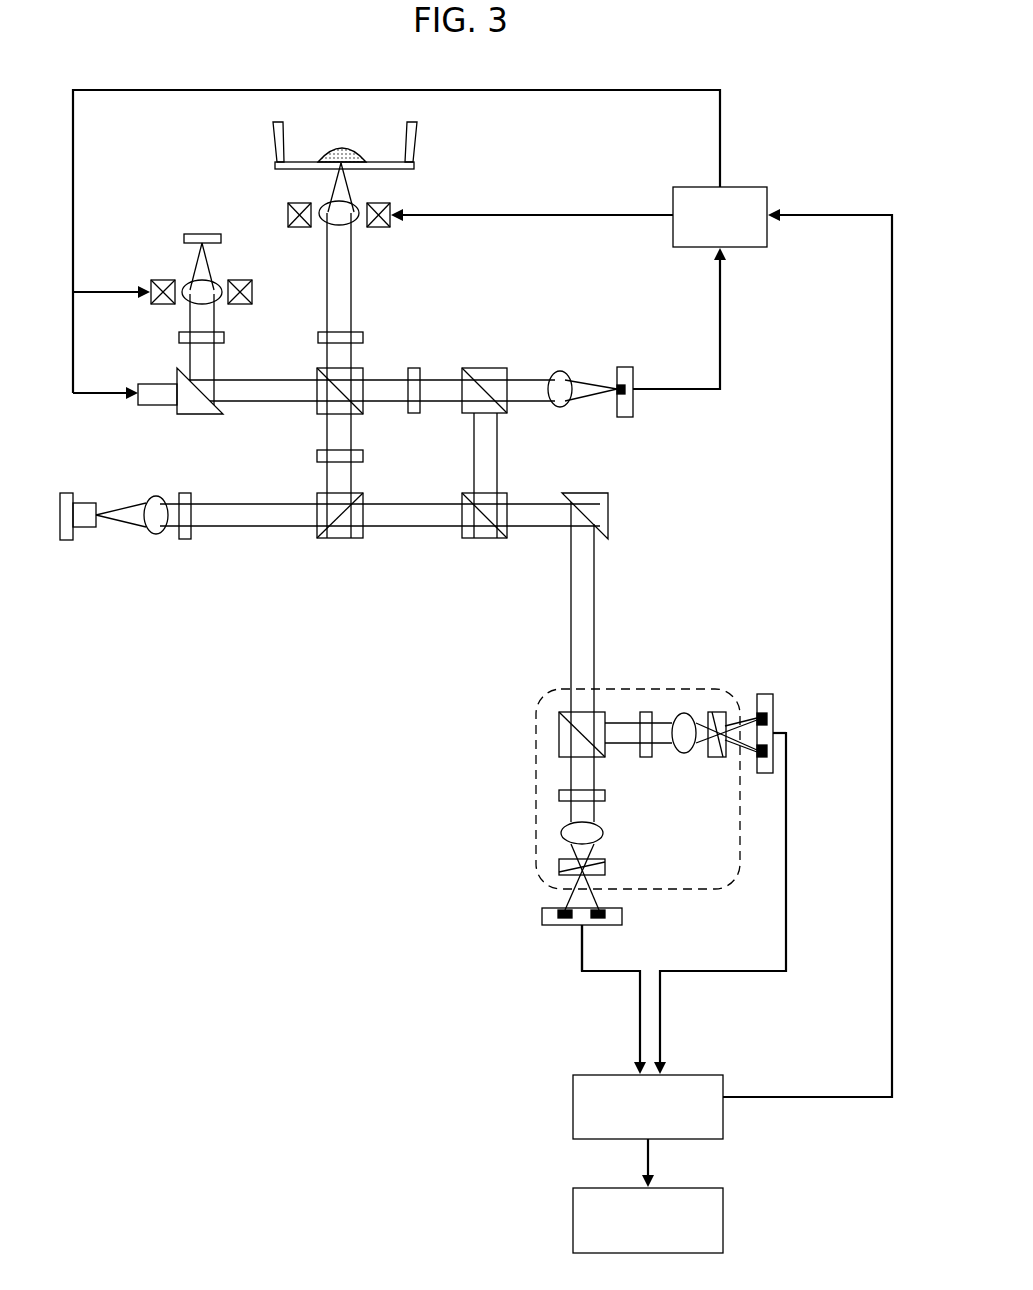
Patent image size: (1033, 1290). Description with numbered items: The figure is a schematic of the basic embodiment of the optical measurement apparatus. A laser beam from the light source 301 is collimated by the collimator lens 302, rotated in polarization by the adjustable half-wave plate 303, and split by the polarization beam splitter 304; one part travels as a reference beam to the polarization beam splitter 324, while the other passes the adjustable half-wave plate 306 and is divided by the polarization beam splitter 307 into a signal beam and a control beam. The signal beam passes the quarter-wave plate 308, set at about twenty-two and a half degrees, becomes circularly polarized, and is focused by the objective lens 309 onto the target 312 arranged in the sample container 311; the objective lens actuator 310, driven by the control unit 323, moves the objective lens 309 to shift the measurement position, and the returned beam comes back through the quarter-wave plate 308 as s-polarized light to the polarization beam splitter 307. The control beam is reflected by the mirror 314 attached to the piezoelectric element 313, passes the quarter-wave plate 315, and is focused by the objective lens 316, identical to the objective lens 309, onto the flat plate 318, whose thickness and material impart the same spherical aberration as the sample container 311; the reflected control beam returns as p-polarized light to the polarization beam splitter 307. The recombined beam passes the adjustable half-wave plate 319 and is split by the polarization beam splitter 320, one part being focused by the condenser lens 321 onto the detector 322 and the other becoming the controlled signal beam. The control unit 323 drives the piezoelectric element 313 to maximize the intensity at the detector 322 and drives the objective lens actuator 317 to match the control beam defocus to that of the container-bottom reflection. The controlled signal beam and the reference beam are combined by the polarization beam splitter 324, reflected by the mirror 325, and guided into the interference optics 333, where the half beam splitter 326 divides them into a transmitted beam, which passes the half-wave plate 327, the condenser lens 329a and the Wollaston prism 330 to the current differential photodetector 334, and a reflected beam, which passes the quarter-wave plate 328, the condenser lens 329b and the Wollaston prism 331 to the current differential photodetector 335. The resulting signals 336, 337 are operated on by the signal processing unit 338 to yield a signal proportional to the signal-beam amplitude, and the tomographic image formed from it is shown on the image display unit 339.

The light source 301 is at (66, 541).
The collimator lens 302 is at (154, 534).
The λ/2 plate 303 is at (185, 540).
The polarization beam splitter 304 is at (340, 539).
The λ/2 plate 306 is at (317, 456).
The polarization beam splitter 307 is at (317, 409).
The λ/4 plate 308 is at (318, 337).
The objective lens 309 is at (357, 203).
The objective lens actuator 310 is at (380, 228).
The sample container 311 is at (418, 130).
The target to be measured 312 is at (352, 148).
The piezoelectric element 313 is at (150, 407).
The mirror 314 is at (197, 416).
The λ/4 plate 315 is at (179, 337).
The objective lens 316 is at (188, 283).
The objective lens actuator 317 is at (242, 280).
The flat plate 318 is at (194, 233).
The λ/2 plate 319 is at (415, 368).
The polarization beam splitter 320 is at (490, 369).
The condenser lens 321 is at (560, 371).
The detector 322 is at (627, 366).
The control unit 323 is at (740, 187).
The polarization beam splitter 324 is at (483, 540).
The mirror 325 is at (607, 493).
The half beam splitter 326 is at (558, 737).
The λ/2 plate 327 is at (605, 795).
The λ/4 plate 328 is at (645, 711).
The condenser lens 329a is at (605, 833).
The condenser lens 329b is at (680, 712).
The Wollaston prism 330 is at (605, 867).
The Wollaston prism 331 is at (715, 711).
The interference optics 333 is at (536, 832).
The current differential photodetector 334 is at (622, 916).
The current differential photodetector 335 is at (767, 691).
The signal 336 is at (583, 952).
The signal 337 is at (788, 762).
The signal processing unit 338 is at (703, 1075).
The image display unit 339 is at (700, 1188).